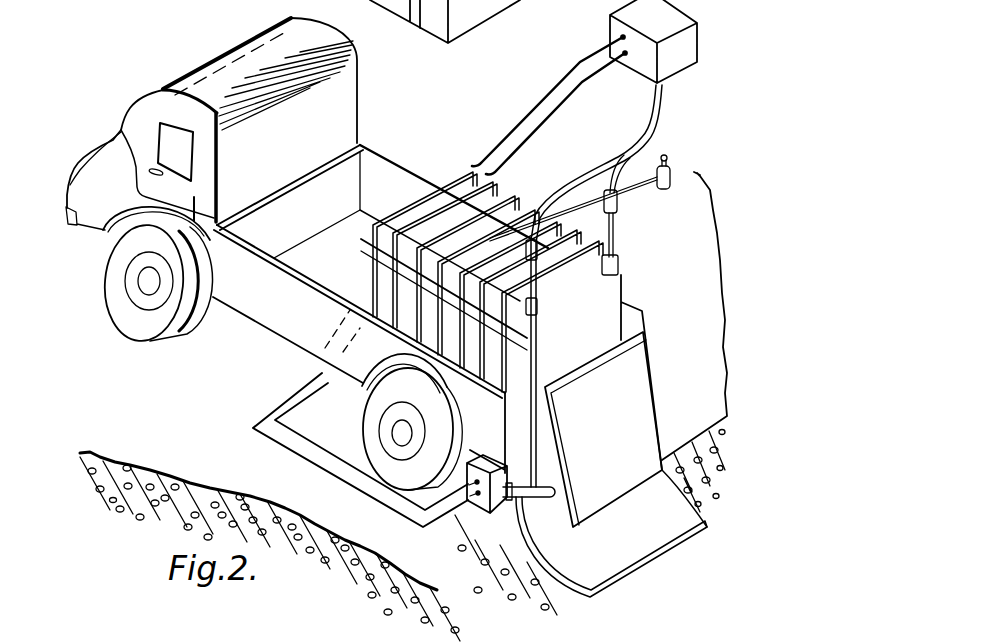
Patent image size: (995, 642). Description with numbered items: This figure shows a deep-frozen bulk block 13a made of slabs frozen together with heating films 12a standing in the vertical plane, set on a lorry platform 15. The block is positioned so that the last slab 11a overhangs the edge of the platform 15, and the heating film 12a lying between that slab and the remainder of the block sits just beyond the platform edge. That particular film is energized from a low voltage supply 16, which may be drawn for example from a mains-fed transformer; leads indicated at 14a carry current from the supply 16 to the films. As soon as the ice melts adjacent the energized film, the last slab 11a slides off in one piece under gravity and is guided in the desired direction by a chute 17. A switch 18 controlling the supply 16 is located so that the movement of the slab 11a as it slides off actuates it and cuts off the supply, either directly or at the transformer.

The last slab 11a is at (555, 510).
The heating film 12a is at (607, 300).
The bulk block 13a is at (400, 193).
The supply tubes 14a is at (506, 192).
The lorry platform 15 is at (328, 258).
The low voltage supply 16 is at (656, 86).
The chute 17 is at (605, 547).
The switch 18 is at (481, 501).